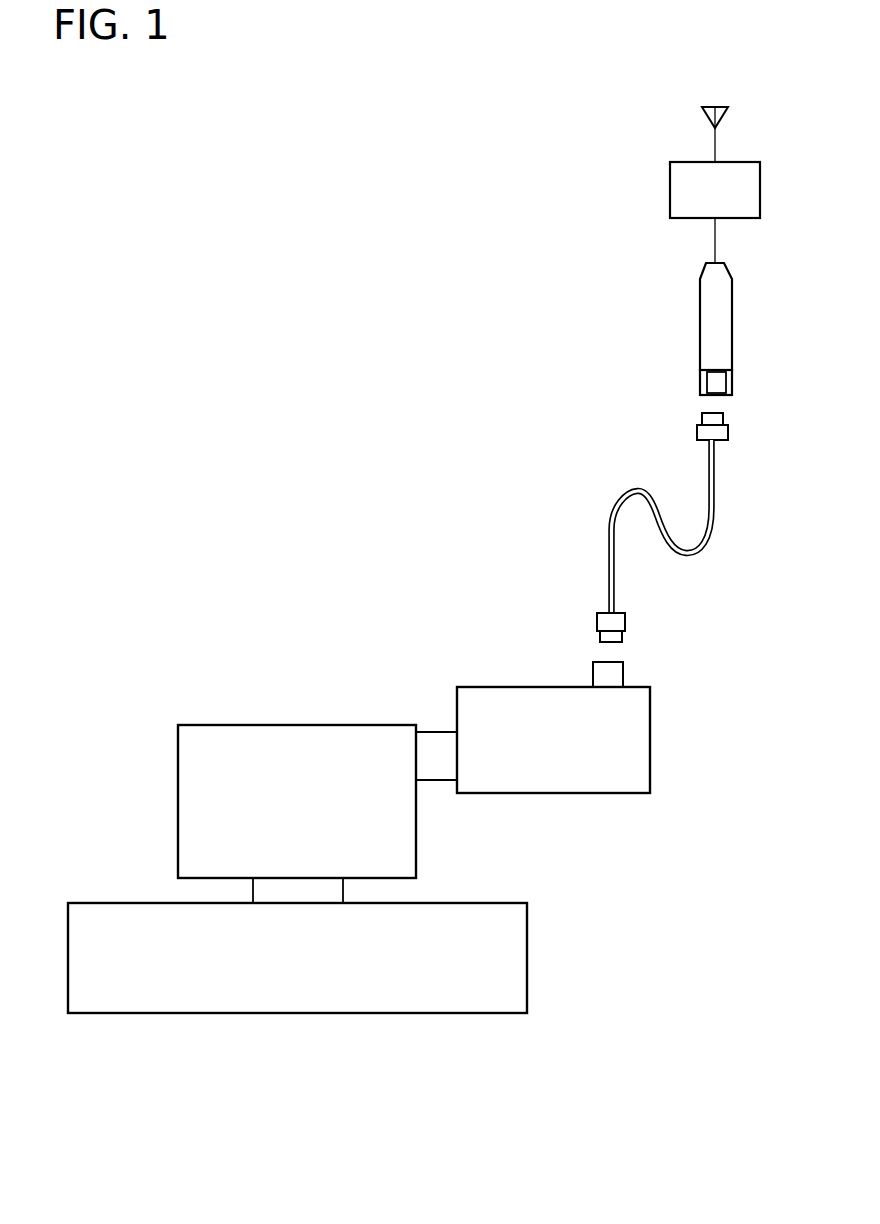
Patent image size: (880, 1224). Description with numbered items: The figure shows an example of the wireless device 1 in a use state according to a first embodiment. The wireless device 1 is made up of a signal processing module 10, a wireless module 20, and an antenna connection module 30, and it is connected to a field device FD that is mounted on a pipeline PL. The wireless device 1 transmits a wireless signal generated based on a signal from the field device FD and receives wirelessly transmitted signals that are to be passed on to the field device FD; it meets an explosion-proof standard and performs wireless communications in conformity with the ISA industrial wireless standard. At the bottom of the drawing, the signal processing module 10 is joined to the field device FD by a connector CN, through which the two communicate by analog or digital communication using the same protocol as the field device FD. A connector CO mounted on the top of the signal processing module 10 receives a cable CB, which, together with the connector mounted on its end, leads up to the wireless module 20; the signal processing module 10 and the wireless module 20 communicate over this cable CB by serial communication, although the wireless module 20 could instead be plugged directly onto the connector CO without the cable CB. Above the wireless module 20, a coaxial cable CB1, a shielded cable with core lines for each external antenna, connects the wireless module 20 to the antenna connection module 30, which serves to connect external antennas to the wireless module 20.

The wireless device 1 is at (455, 376).
The signal processing module 10 is at (640, 737).
The wireless module 20 is at (722, 320).
The antenna connection module 30 is at (745, 190).
The cable CB is at (697, 557).
The coaxial cable CB1 is at (716, 247).
The connector CO is at (617, 668).
The connector CN is at (437, 785).
The field device FD is at (298, 732).
The pipeline PL is at (292, 1002).